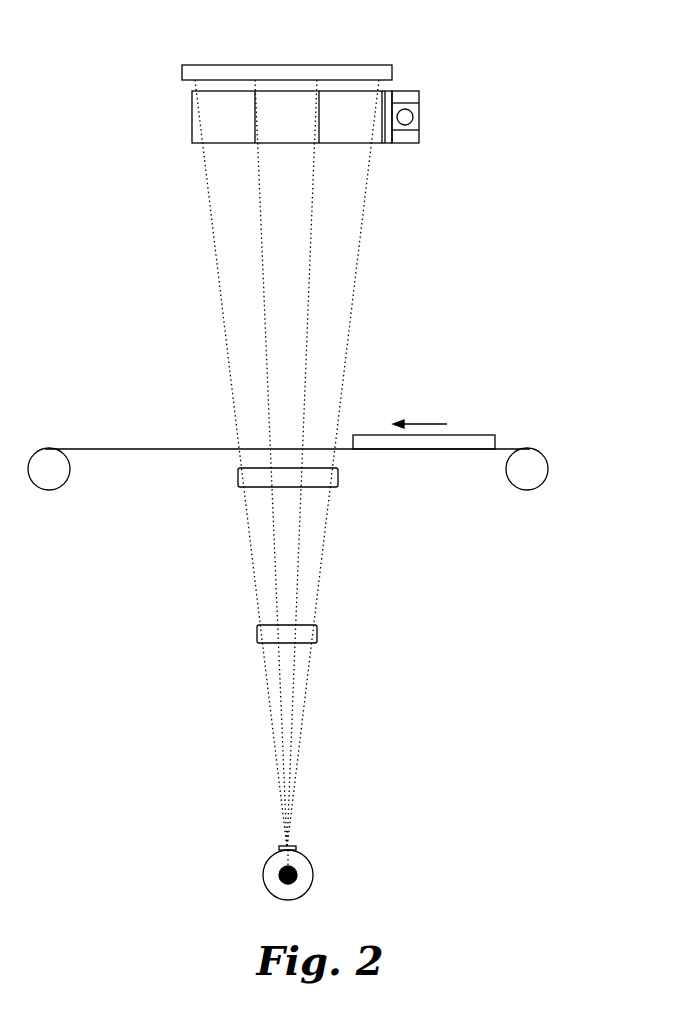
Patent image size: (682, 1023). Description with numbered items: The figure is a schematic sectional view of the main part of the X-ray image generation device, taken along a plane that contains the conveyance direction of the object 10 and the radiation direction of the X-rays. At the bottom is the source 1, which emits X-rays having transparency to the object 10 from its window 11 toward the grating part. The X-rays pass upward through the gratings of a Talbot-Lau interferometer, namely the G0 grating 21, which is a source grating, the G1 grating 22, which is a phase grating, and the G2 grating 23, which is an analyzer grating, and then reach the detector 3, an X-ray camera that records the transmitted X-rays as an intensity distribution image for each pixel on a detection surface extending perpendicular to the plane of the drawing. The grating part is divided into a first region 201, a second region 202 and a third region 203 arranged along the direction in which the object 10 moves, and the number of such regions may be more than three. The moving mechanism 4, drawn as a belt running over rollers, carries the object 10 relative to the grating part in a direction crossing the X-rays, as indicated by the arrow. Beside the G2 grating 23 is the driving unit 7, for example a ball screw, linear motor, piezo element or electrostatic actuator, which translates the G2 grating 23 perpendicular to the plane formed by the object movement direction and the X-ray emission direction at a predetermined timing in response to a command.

The source 1 is at (340, 868).
The window 11 is at (292, 846).
The G0 grating 21 is at (317, 633).
The G1 grating 22 is at (338, 487).
The G2 grating 23 is at (200, 144).
The detector 3 is at (213, 64).
The driving unit 7 is at (405, 144).
The moving mechanism 4 is at (547, 460).
The object 10 is at (483, 435).
The first region 201 is at (335, 311).
The second region 202 is at (293, 362).
The third region 203 is at (245, 366).